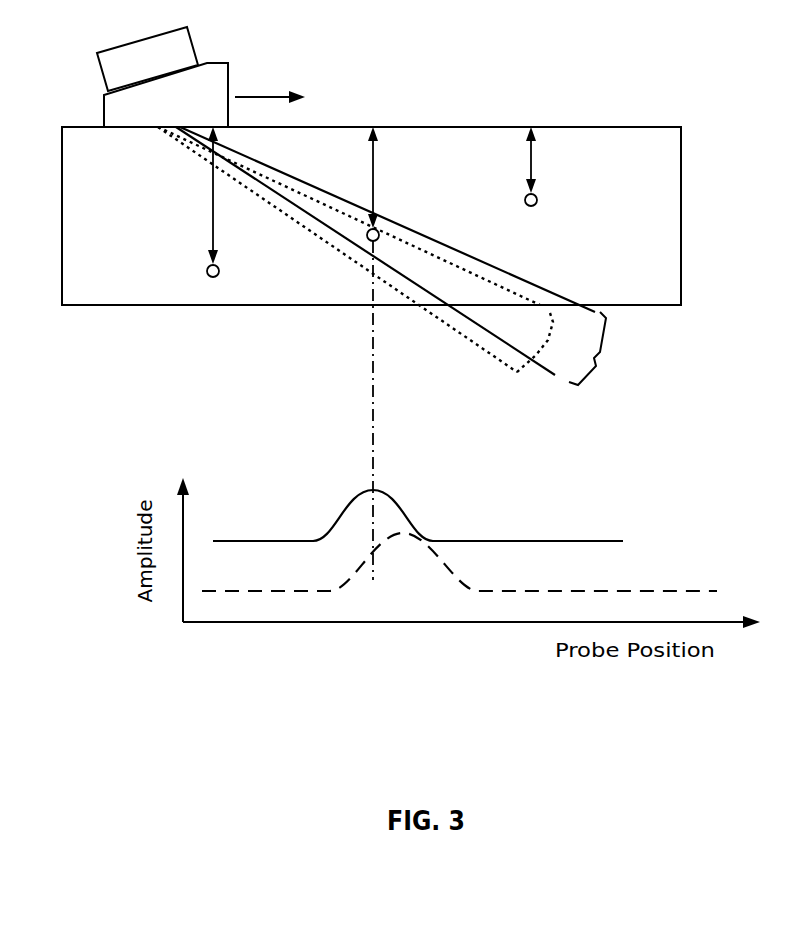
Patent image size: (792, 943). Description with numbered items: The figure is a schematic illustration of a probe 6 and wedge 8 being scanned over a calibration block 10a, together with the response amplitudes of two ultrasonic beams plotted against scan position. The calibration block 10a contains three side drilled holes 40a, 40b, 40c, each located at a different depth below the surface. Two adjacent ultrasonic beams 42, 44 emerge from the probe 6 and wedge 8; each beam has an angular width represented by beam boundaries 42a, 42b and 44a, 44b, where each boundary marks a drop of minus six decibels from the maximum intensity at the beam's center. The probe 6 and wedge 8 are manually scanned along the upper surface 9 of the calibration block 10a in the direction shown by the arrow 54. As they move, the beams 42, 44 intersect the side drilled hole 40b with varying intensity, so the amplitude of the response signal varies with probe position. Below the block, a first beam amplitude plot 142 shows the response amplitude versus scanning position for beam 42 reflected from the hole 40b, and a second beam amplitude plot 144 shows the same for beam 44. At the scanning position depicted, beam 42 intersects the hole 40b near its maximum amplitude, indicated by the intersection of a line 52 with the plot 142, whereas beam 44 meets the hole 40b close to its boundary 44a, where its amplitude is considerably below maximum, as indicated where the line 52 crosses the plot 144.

The probe 6 is at (141, 51).
The wedge 8 is at (117, 111).
The upper surface 9 is at (465, 127).
The calibration block 10a is at (79, 290).
The arrow 54 is at (256, 94).
The side drilled hole 40a is at (537, 200).
The side drilled hole 40b is at (379, 230).
The side drilled hole 40c is at (219, 271).
The ultrasonic beam 42 is at (419, 269).
The beam boundary 42a is at (517, 277).
The beam boundary 42b is at (490, 333).
The ultrasonic beam 44 is at (376, 272).
The beam boundary 44a is at (452, 265).
The beam boundary 44b is at (433, 315).
The line 52 is at (371, 441).
The first beam amplitude plot 142 is at (510, 541).
The second beam amplitude plot 144 is at (615, 591).